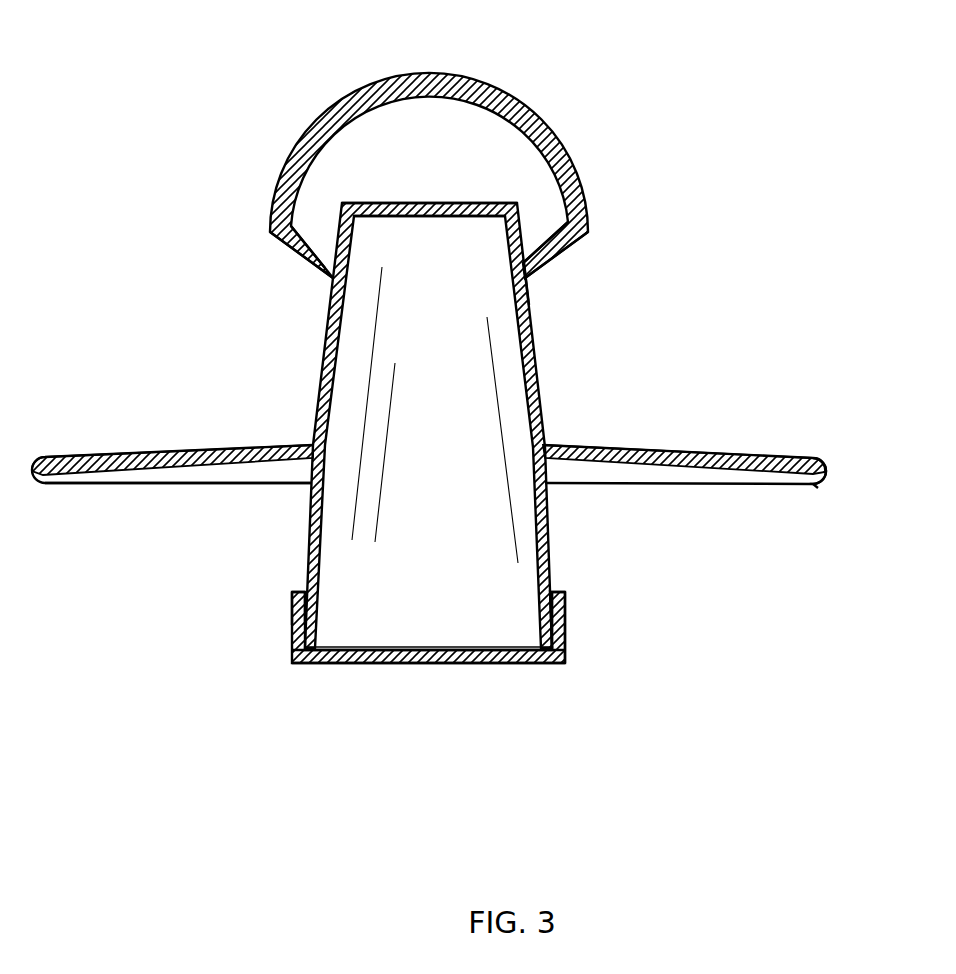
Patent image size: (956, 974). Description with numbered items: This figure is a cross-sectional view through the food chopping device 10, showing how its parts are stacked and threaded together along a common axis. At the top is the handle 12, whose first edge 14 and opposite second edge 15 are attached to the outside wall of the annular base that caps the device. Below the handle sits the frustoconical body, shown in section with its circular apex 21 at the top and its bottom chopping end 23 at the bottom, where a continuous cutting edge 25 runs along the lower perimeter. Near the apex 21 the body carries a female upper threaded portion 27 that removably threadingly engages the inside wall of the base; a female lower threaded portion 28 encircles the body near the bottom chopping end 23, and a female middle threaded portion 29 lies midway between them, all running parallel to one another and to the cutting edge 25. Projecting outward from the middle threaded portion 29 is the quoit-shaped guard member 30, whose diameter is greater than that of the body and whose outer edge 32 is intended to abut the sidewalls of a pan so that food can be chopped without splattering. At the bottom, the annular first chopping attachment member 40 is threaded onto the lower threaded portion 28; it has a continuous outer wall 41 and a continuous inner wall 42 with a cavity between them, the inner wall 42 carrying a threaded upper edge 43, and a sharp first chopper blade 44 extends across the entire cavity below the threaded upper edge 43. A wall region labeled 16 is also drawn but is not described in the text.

The food chopping device 10 is at (158, 213).
The handle 12 is at (440, 68).
The first edge 14 is at (556, 258).
The second edge 15 is at (327, 278).
The nipple body side wall 16 is at (552, 540).
The circular apex 21 is at (490, 206).
The bottom chopping end 23 is at (553, 629).
The cutting edge 25 is at (530, 651).
The upper threaded portion 27 is at (540, 283).
The lower threaded portion 28 is at (551, 588).
The middle threaded portion 29 is at (310, 489).
The guard member 30 is at (727, 447).
The outer edge 32 is at (820, 488).
The first chopping attachment member 40 is at (292, 628).
The outer wall 41 is at (557, 643).
The inner wall 42 is at (316, 443).
The threaded upper edge 43 is at (302, 609).
The first chopper blade 44 is at (366, 665).